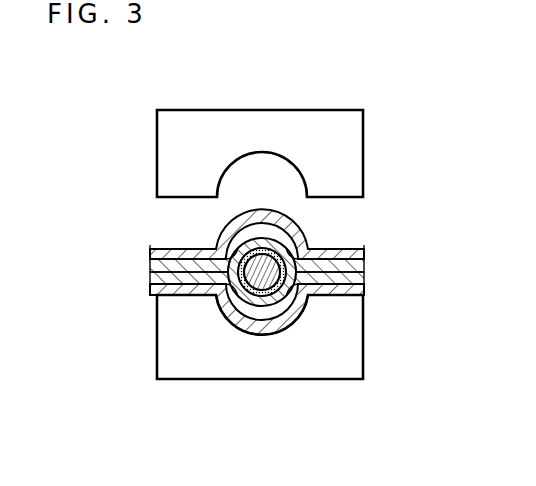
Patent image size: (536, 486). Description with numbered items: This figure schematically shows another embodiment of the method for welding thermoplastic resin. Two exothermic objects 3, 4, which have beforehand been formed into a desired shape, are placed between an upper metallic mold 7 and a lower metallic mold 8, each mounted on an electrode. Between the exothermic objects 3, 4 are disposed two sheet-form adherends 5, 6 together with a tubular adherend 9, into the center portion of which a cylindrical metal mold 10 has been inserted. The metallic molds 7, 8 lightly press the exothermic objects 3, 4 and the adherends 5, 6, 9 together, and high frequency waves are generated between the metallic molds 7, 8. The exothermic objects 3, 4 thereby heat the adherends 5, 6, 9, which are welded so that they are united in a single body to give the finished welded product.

The exothermic object 3 is at (366, 250).
The exothermic object 4 is at (365, 297).
The adherend 5 is at (365, 269).
The adherend 6 is at (365, 280).
The metallic mold 7 is at (354, 167).
The metallic mold 8 is at (340, 348).
The tubular adherend 9 is at (242, 300).
The cylindrical metal mold 10 is at (268, 297).